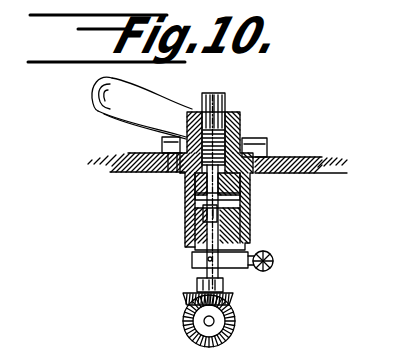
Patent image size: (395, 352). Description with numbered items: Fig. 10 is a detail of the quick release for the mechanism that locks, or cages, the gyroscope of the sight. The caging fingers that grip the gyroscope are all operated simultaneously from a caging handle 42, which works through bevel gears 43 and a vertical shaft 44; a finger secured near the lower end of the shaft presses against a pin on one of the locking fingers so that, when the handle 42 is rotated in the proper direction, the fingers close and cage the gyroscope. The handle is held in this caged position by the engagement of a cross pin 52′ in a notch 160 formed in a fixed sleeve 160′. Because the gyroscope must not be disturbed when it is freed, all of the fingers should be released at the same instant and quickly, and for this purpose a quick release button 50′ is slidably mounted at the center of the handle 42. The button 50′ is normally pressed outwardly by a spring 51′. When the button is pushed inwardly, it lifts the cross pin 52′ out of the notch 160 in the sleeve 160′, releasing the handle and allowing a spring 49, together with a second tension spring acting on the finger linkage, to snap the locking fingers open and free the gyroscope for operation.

The caging handle 42 is at (94, 103).
The quick release button 50′ is at (222, 110).
The spring 51′ is at (240, 125).
The cross pin 52′ is at (200, 199).
The notch 160 is at (242, 200).
The fixed sleeve 160′ is at (187, 227).
The spring 49 is at (270, 256).
The bevel gears 43 is at (195, 304).
The vertical shaft 44 is at (214, 322).